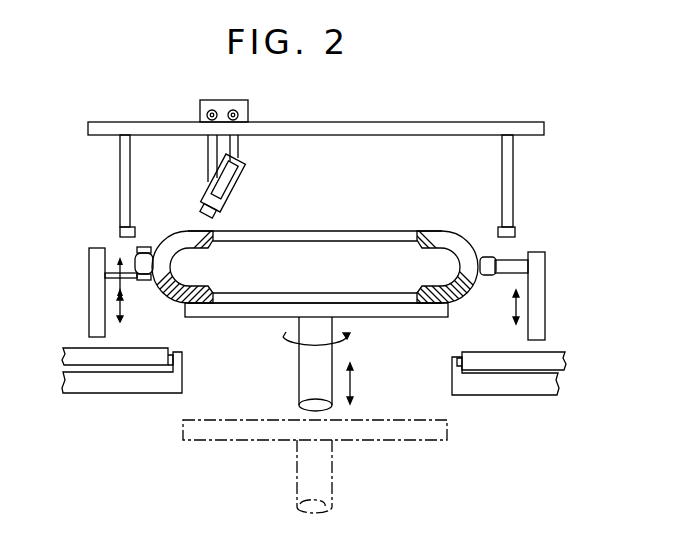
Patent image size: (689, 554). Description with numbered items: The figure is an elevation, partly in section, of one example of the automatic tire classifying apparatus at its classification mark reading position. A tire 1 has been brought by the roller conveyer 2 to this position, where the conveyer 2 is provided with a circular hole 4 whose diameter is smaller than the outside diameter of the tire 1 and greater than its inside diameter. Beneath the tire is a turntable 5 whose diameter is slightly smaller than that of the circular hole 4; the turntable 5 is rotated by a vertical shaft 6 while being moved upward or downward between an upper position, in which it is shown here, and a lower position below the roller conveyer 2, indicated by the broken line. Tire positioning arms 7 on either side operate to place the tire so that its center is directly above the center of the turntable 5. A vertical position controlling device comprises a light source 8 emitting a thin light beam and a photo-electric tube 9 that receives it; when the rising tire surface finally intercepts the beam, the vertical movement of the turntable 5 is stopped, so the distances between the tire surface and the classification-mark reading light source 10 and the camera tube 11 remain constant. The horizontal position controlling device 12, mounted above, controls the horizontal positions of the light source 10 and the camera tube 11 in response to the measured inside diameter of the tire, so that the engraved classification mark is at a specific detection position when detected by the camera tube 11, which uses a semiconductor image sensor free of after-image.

The tire 1 is at (378, 233).
The conveyer 2 is at (497, 397).
The circular hole 4 is at (462, 372).
The turntable 5 is at (407, 318).
The vertical shaft 6 is at (299, 383).
The tire positioning arms 7 is at (133, 258).
The light source 8 is at (136, 229).
The photo-electric tube 9 is at (500, 232).
The classification-mark reading light source 10 is at (212, 186).
The camera tube 11 is at (242, 178).
The horizontal position controlling device 12 is at (200, 100).